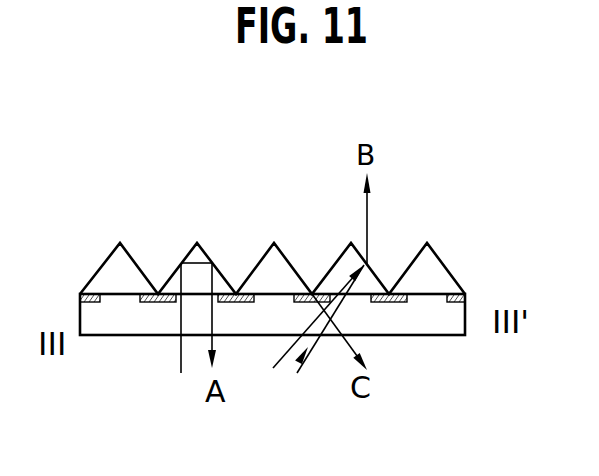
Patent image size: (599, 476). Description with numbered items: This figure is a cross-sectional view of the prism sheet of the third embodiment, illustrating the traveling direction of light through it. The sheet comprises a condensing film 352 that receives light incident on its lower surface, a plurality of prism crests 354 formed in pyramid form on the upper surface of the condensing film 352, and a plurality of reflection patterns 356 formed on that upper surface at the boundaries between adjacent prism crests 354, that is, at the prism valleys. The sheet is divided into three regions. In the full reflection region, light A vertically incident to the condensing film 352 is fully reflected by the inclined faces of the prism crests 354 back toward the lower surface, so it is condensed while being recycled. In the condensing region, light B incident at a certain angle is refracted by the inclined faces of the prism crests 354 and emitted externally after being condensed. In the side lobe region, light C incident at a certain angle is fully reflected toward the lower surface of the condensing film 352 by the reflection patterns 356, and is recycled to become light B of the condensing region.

The condensing film 352 is at (465, 325).
The prism crests 354 is at (437, 268).
The reflection patterns 356 is at (403, 298).